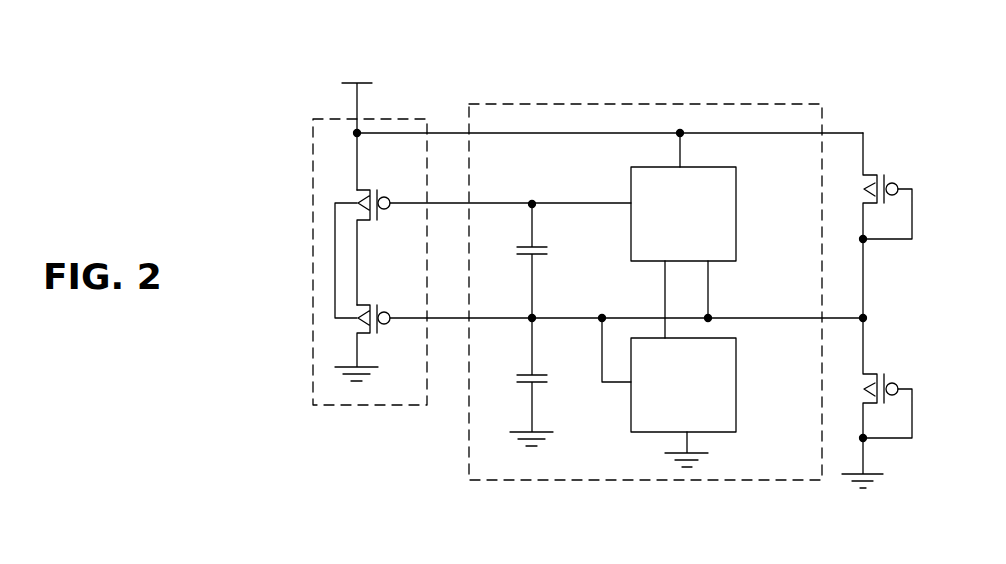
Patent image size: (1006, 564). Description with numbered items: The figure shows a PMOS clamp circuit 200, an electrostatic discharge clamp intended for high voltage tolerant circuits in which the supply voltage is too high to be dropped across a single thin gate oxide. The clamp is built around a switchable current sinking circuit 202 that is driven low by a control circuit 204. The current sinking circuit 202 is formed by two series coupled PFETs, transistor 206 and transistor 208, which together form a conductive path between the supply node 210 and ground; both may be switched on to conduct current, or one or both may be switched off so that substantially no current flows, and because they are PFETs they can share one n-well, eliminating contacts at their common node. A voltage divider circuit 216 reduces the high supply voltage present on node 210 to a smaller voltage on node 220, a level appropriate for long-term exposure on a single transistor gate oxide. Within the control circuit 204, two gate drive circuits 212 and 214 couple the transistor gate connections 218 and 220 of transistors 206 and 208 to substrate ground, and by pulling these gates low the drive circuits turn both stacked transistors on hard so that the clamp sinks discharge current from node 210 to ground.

The PMOS clamp circuit 200 is at (841, 74).
The switchable current sinking circuit 202 is at (313, 162).
The control circuit 204 is at (619, 104).
The transistor 206 is at (370, 190).
The transistor 208 is at (370, 305).
The node 210 is at (359, 83).
The gate drive circuit 212 is at (738, 193).
The gate drive circuit 214 is at (738, 363).
The voltage divider circuit 216 is at (919, 162).
The transistor gate connection 218 is at (509, 204).
The node 220 is at (567, 318).